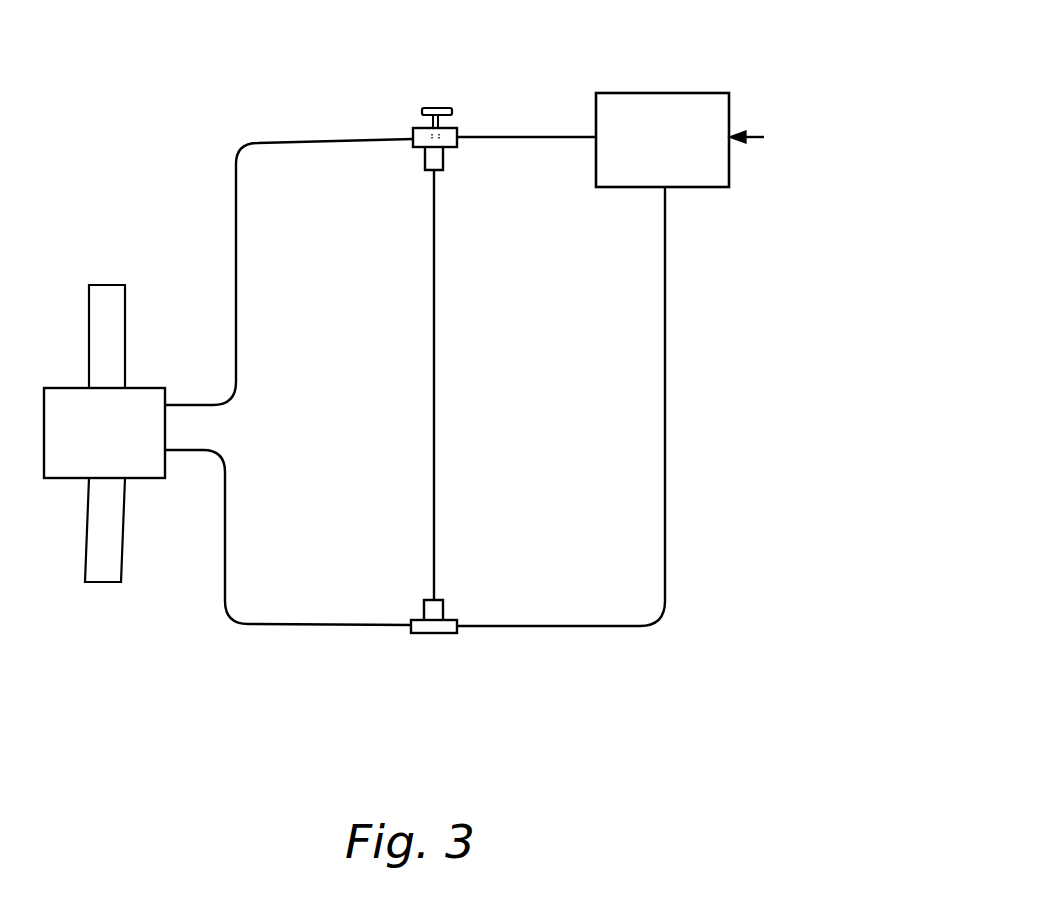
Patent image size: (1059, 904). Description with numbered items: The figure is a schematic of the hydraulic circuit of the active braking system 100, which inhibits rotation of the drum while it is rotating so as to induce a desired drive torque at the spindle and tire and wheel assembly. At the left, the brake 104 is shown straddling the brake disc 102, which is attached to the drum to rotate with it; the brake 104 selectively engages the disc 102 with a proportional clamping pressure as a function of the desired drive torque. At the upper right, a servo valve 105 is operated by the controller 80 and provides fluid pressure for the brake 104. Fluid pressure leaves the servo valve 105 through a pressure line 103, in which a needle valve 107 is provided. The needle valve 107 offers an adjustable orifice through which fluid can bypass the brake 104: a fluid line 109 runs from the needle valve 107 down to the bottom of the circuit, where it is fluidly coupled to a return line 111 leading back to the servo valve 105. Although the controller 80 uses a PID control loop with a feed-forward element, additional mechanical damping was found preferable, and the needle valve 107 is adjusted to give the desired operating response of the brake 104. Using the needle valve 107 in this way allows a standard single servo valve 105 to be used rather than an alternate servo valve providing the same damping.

The active braking system 100 is at (215, 93).
The brake disc 102 is at (108, 284).
The pressure line 103 is at (544, 137).
The brake 104 is at (165, 478).
The servo valve 105 is at (713, 93).
The needle valve 107 is at (457, 128).
The fluid line 109 is at (435, 403).
The return line 111 is at (665, 378).
The controller 80 is at (829, 148).